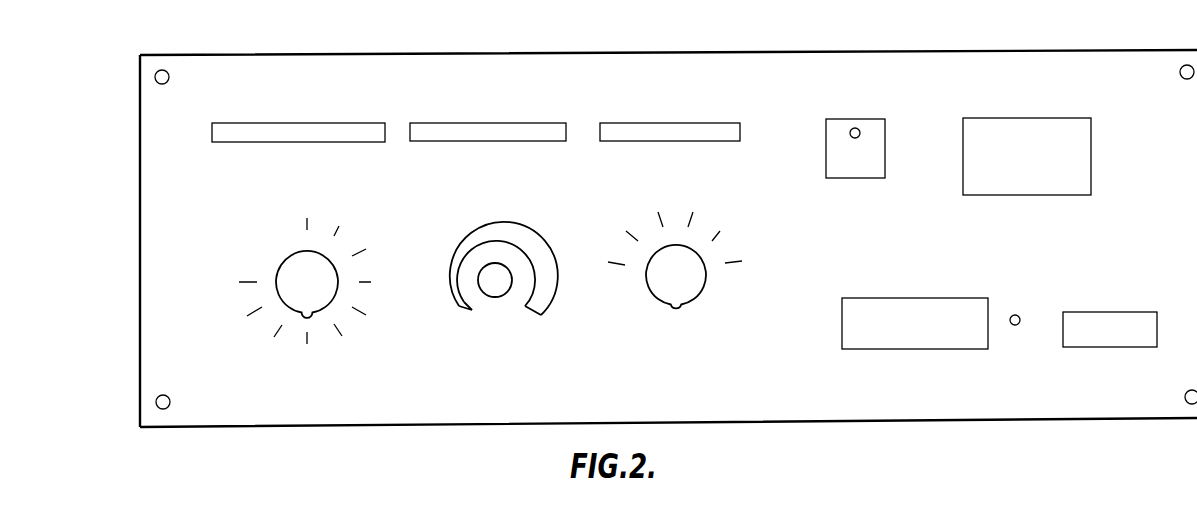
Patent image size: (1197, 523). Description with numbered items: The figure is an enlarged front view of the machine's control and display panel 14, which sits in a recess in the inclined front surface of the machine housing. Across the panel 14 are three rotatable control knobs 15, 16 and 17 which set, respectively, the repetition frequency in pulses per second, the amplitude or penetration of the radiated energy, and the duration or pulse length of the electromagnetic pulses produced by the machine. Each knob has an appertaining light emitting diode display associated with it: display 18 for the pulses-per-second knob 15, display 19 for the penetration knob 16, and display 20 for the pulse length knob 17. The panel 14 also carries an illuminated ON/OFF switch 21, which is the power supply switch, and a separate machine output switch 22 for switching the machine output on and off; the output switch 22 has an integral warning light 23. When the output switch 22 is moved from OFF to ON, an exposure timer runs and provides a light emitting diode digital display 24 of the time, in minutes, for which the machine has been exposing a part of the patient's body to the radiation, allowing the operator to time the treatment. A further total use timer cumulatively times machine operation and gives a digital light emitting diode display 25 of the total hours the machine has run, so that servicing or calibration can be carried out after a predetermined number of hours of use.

The control and display panel 14 is at (655, 377).
The rotatable control knob 15 is at (292, 263).
The rotatable control knob 16 is at (493, 272).
The rotatable control knob 17 is at (698, 283).
The light emitting diode display 18 is at (386, 130).
The light emitting diode display 19 is at (566, 128).
The light emitting diode display 20 is at (740, 128).
The ON/OFF switch 21 is at (1120, 315).
The machine output switch 22 is at (885, 138).
The warning light 23 is at (856, 128).
The light emitting diode digital display 24 is at (1024, 124).
The digital light emitting diode display 25 is at (963, 303).